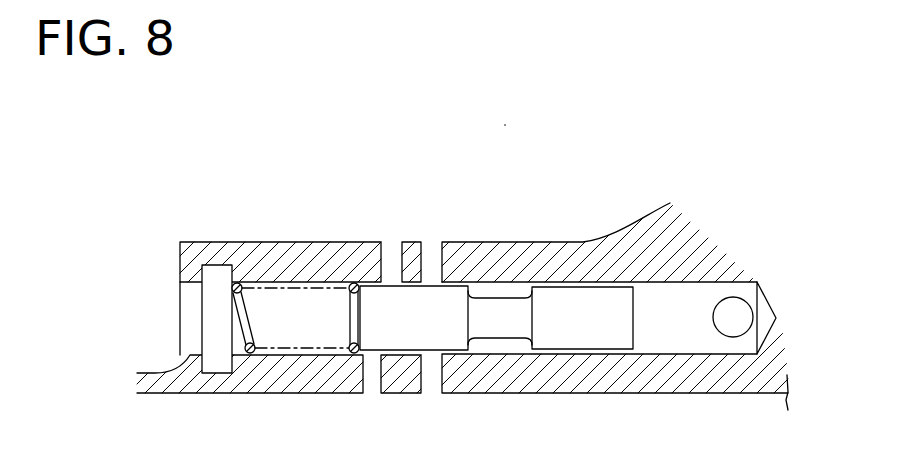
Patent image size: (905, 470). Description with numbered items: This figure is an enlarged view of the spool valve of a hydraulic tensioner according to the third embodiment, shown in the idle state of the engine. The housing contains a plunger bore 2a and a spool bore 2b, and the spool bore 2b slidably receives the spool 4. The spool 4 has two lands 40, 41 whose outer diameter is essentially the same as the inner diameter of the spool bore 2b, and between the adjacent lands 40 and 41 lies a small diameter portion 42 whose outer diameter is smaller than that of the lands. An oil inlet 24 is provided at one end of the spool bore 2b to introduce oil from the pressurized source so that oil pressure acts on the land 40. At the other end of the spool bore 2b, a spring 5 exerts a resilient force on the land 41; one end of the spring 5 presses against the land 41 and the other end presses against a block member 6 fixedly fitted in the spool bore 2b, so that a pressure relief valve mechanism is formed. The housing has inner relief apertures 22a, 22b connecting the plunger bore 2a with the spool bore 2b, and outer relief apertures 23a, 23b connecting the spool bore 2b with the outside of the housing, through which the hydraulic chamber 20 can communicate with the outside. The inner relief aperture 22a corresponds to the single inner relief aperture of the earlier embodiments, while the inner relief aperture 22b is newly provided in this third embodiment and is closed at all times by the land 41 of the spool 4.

The plunger bore 2a is at (300, 392).
The spool bore 2b is at (703, 282).
The spool 4 is at (496, 322).
The spring 5 is at (249, 352).
The block member 6 is at (212, 366).
The hydraulic chamber 20 is at (750, 435).
The inner relief aperture 22a is at (440, 390).
The inner relief aperture 22b is at (367, 388).
The outer relief aperture 23a is at (440, 248).
The outer relief aperture 23b is at (383, 248).
The oil inlet 24 is at (744, 306).
The land 40 is at (588, 343).
The land 41 is at (452, 342).
The small diameter portion 42 is at (497, 330).